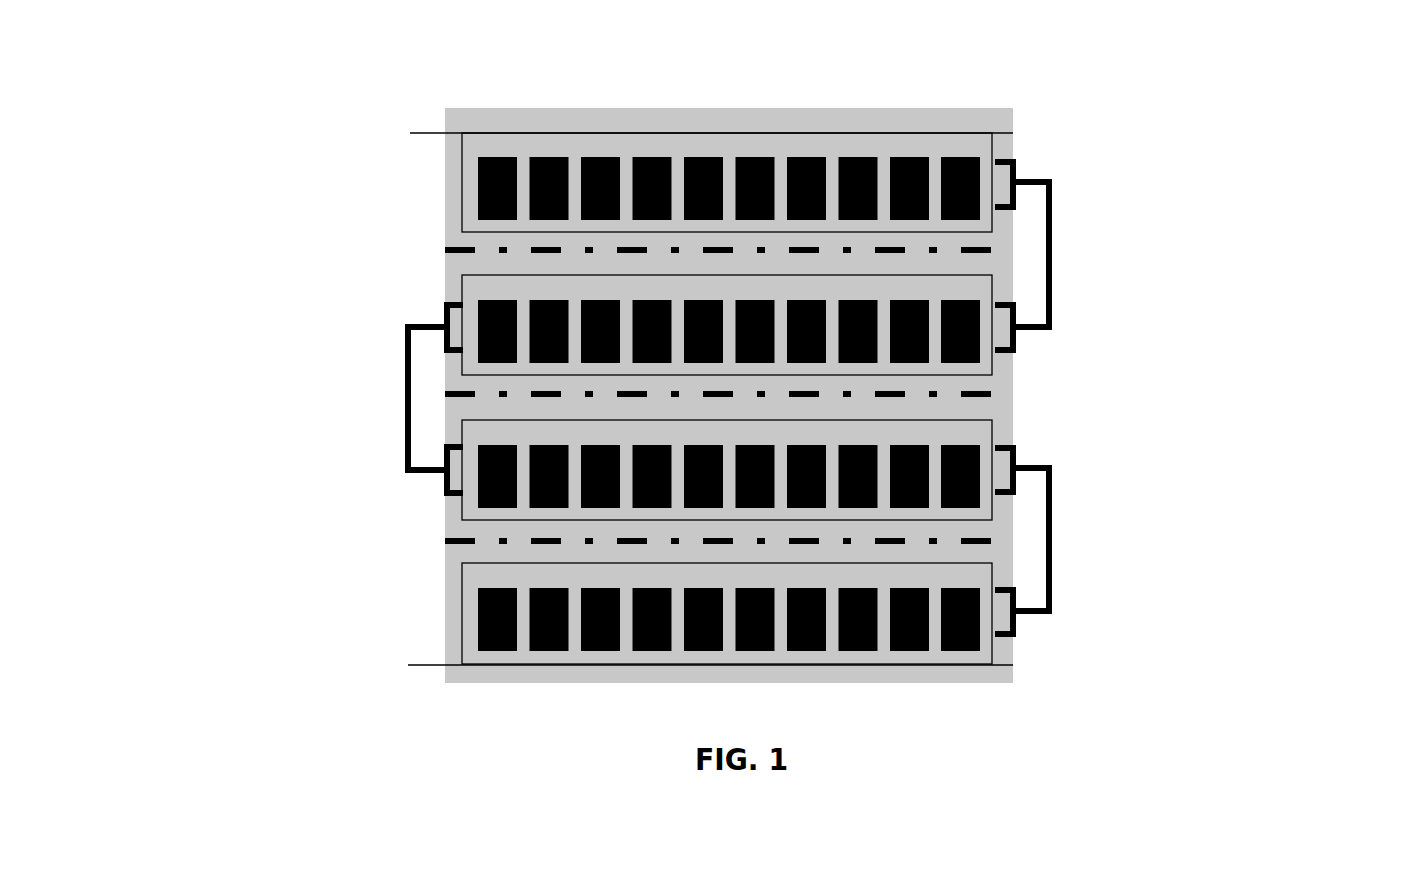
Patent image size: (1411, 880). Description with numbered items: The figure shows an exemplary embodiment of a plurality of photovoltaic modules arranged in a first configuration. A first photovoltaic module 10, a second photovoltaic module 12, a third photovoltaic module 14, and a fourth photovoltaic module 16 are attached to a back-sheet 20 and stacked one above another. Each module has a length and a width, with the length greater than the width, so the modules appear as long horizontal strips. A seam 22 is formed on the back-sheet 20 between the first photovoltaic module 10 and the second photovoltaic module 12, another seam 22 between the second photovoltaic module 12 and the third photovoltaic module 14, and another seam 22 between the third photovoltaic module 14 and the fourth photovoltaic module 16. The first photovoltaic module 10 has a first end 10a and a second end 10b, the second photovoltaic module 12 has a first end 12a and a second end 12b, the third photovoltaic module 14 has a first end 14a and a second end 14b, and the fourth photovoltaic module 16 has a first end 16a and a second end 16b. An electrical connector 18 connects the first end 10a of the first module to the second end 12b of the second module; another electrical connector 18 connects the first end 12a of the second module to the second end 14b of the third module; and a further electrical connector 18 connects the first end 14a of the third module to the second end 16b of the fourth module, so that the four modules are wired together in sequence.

The first photovoltaic module 10 is at (666, 160).
The first end of the first photovoltaic module 10a is at (964, 154).
The second end of the first photovoltaic module 10b is at (497, 154).
The second photovoltaic module 12 is at (668, 317).
The first end of the second photovoltaic module 12a is at (496, 311).
The second end of the second photovoltaic module 12b is at (962, 311).
The third photovoltaic module 14 is at (667, 460).
The first end of the third photovoltaic module 14a is at (963, 454).
The second end of the third photovoltaic module 14b is at (497, 454).
The fourth photovoltaic module 16 is at (668, 606).
The first end of the fourth photovoltaic module 16a is at (496, 599).
The second end of the fourth photovoltaic module 16b is at (964, 599).
The electrical connector 18 is at (1053, 246).
The back-sheet 20 is at (710, 112).
The seam 22 is at (445, 541).